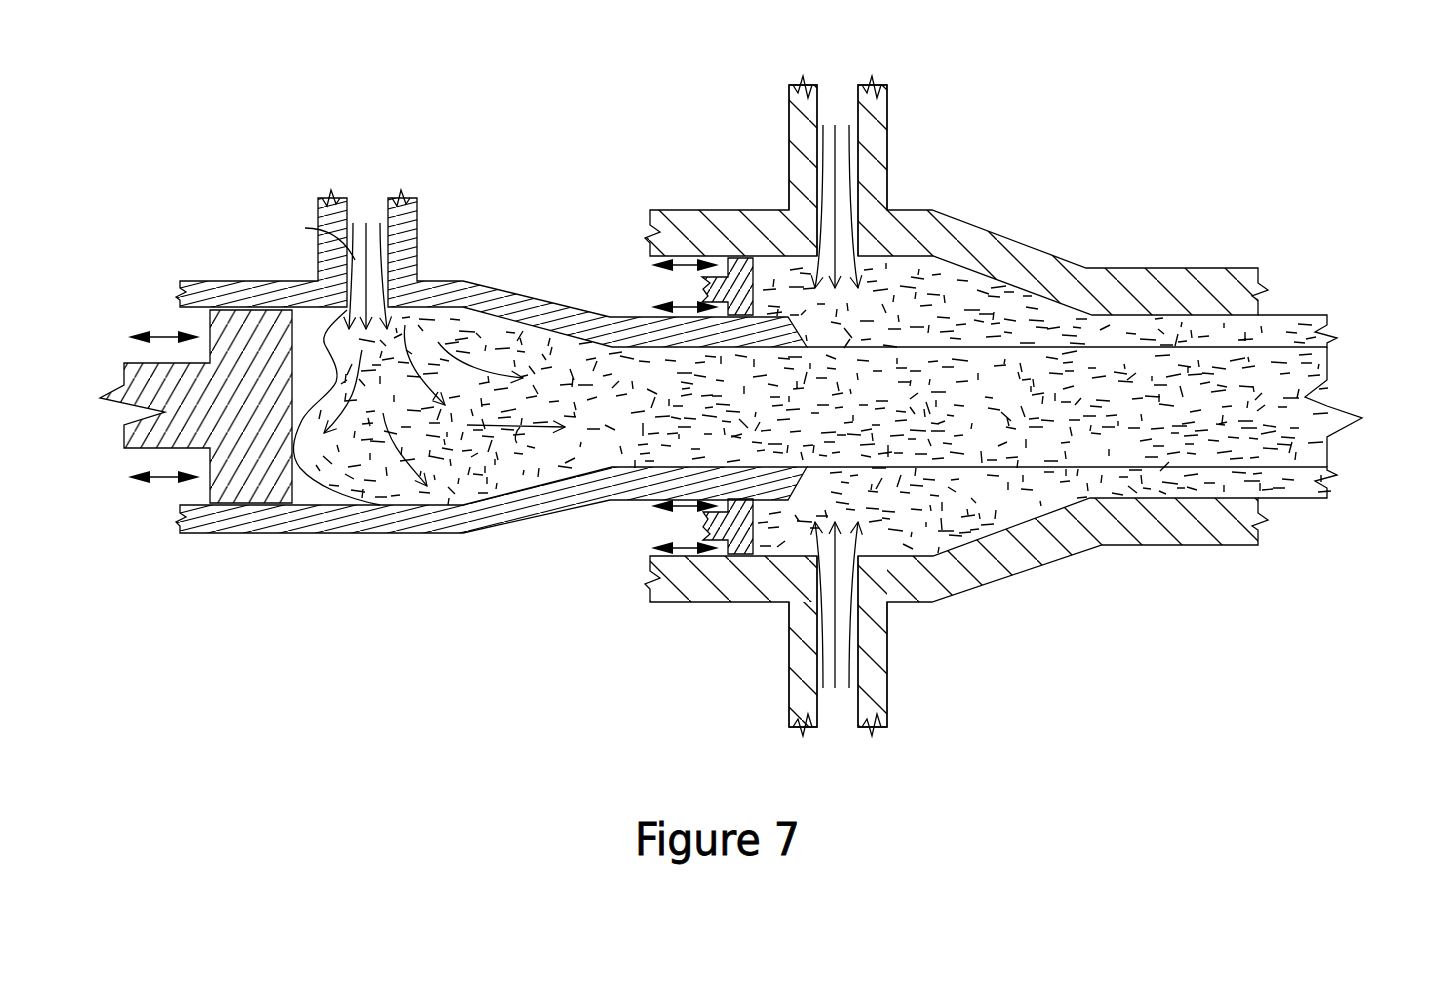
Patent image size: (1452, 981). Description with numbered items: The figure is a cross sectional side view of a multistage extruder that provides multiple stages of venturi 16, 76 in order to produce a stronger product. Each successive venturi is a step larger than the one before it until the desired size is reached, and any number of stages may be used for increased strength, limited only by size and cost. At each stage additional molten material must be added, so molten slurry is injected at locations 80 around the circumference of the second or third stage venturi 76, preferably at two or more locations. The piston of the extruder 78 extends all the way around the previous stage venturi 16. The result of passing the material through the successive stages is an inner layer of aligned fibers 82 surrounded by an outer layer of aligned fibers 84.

The venturi 16 is at (448, 130).
The venturi 76 is at (1088, 152).
The piston of the extruder 78 is at (712, 258).
The locations 80 is at (878, 125).
The inner layer of aligned fibers 82 is at (1327, 458).
The outer layer of aligned fibers 84 is at (1300, 315).